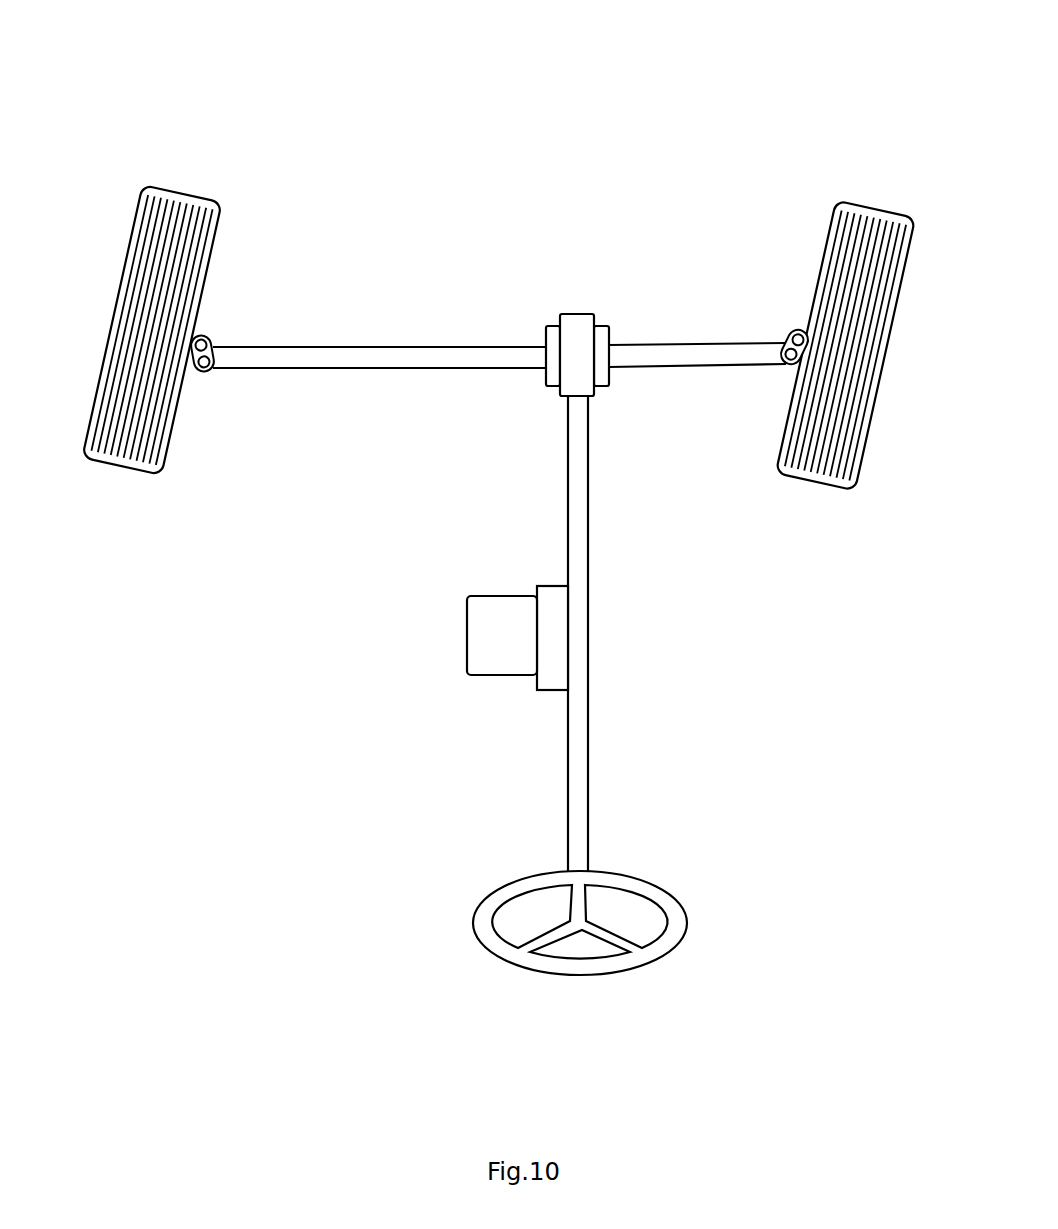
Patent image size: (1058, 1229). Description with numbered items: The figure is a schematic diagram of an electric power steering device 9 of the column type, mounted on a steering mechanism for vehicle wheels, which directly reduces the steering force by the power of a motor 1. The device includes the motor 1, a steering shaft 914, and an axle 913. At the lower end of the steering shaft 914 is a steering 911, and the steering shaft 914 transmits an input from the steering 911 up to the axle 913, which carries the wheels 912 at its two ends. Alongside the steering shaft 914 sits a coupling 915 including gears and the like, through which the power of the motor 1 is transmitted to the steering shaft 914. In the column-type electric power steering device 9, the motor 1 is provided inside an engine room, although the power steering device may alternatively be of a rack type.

The electric power steering device 9 is at (665, 133).
The motor 1 is at (467, 650).
The steering 911 is at (570, 963).
The wheels 912 is at (123, 455).
The axle 913 is at (660, 352).
The steering shaft 914 is at (578, 755).
The coupling 915 is at (550, 598).